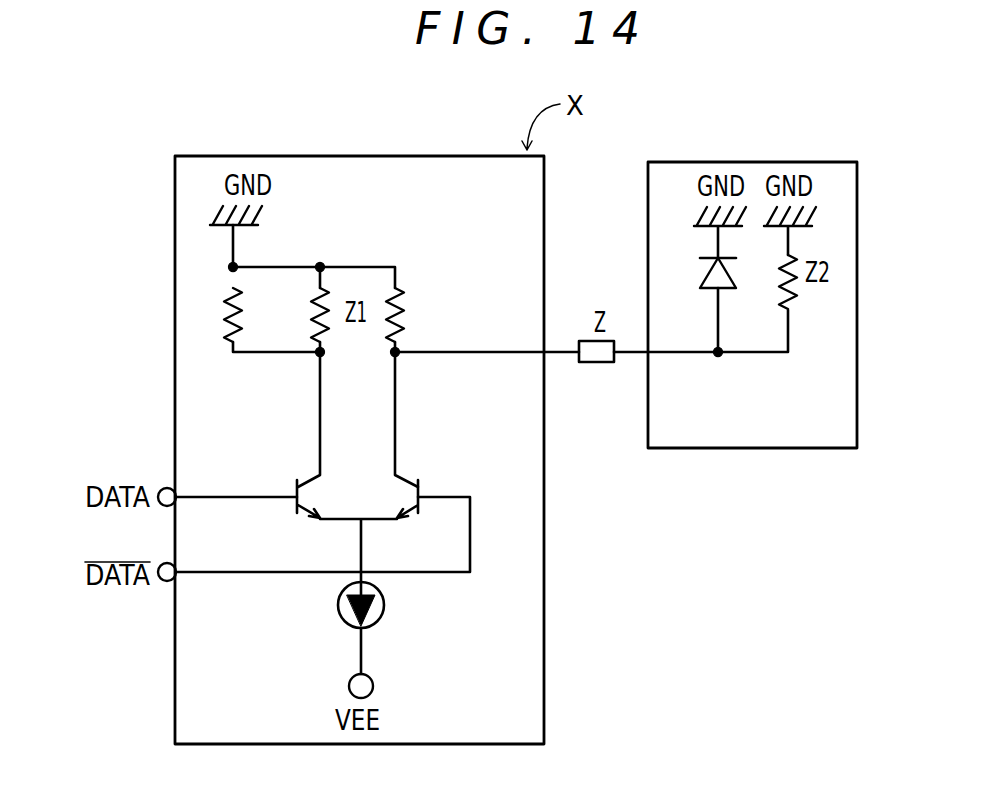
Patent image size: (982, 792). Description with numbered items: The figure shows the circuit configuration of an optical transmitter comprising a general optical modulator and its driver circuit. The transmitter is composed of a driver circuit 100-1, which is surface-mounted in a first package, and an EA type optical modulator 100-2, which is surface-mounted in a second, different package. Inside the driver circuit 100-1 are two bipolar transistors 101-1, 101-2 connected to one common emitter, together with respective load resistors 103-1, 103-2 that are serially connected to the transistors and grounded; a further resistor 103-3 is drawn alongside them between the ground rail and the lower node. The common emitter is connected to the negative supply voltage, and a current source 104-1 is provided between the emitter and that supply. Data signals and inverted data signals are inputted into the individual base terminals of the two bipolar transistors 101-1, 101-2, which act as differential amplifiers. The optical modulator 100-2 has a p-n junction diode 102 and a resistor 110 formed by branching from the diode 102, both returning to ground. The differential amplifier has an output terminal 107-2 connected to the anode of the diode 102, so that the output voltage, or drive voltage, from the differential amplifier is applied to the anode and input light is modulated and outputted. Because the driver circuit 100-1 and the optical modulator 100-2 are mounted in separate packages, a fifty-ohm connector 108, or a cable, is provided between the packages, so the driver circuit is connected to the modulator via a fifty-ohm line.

The driver circuit 100-1 is at (353, 156).
The optical modulator 100-2 is at (734, 162).
The bipolar transistor 101-1 is at (296, 484).
The bipolar transistor 101-2 is at (419, 482).
The p-n junction diode 102 is at (718, 318).
The load resistor 103-1 is at (313, 310).
The load resistor 103-2 is at (403, 304).
The third resistor 103-3 is at (225, 316).
The current source 104-1 is at (338, 605).
The output terminal 107-2 is at (397, 357).
The 50Ω connector 108 is at (598, 366).
The resistor 110 is at (796, 291).